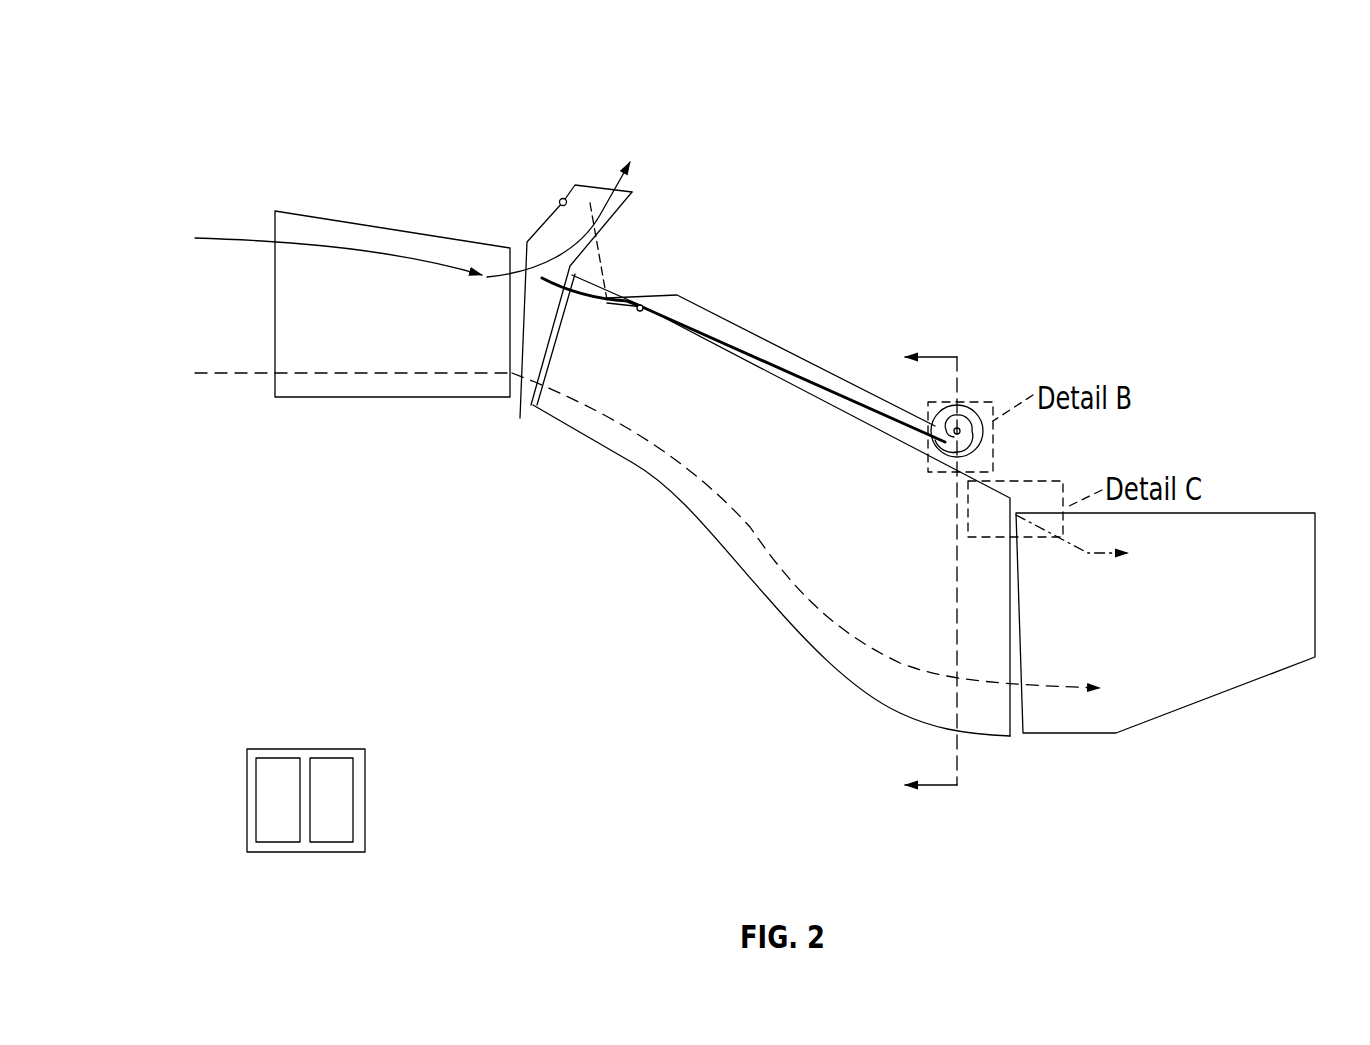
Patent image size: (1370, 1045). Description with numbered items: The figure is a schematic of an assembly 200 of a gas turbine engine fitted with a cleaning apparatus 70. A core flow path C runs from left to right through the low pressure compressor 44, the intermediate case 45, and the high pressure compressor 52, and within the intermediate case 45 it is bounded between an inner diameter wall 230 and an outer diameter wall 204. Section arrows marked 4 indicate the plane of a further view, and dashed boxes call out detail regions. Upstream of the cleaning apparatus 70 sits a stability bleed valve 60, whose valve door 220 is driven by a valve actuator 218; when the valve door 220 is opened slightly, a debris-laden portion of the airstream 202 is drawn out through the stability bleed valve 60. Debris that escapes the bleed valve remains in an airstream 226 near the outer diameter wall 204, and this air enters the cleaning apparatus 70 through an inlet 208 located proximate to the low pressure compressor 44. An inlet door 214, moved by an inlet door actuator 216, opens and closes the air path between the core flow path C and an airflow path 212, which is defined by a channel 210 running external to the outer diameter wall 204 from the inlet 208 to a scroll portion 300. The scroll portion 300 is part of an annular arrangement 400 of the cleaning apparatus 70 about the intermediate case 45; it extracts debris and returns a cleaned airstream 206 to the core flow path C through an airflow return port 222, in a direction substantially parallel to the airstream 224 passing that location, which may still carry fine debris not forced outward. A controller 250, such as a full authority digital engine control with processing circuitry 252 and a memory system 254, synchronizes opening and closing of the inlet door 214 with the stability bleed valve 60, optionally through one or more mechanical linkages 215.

The assembly 200 is at (262, 62).
The airstream 202 is at (205, 233).
The outer diameter wall 204 is at (747, 363).
The cleaned airstream 206 is at (1077, 553).
The inlet 208 is at (663, 293).
The channel 210 is at (730, 320).
The airflow path 212 is at (833, 393).
The inlet door 214 is at (627, 300).
The mechanical linkages 215 is at (597, 240).
The inlet door actuator 216 is at (640, 312).
The valve actuator 218 is at (560, 200).
The valve door 220 is at (577, 183).
The airflow return port 222 is at (998, 476).
The airstream 224 is at (800, 475).
The airstream 226 is at (585, 300).
The inner diameter wall 230 is at (697, 522).
The controller 250 is at (311, 796).
The processing circuitry 252 is at (278, 843).
The memory system 254 is at (332, 843).
The scroll portion 300 is at (957, 423).
The annular arrangement 400 is at (977, 406).
The low pressure compressor 44 is at (350, 337).
The intermediate case 45 is at (771, 505).
The high pressure compressor 52 is at (1283, 606).
The stability bleed valve 60 is at (530, 228).
The cleaning apparatus 70 is at (743, 345).
The section line 4- 4 is at (921, 572).
The core flow path C is at (305, 378).